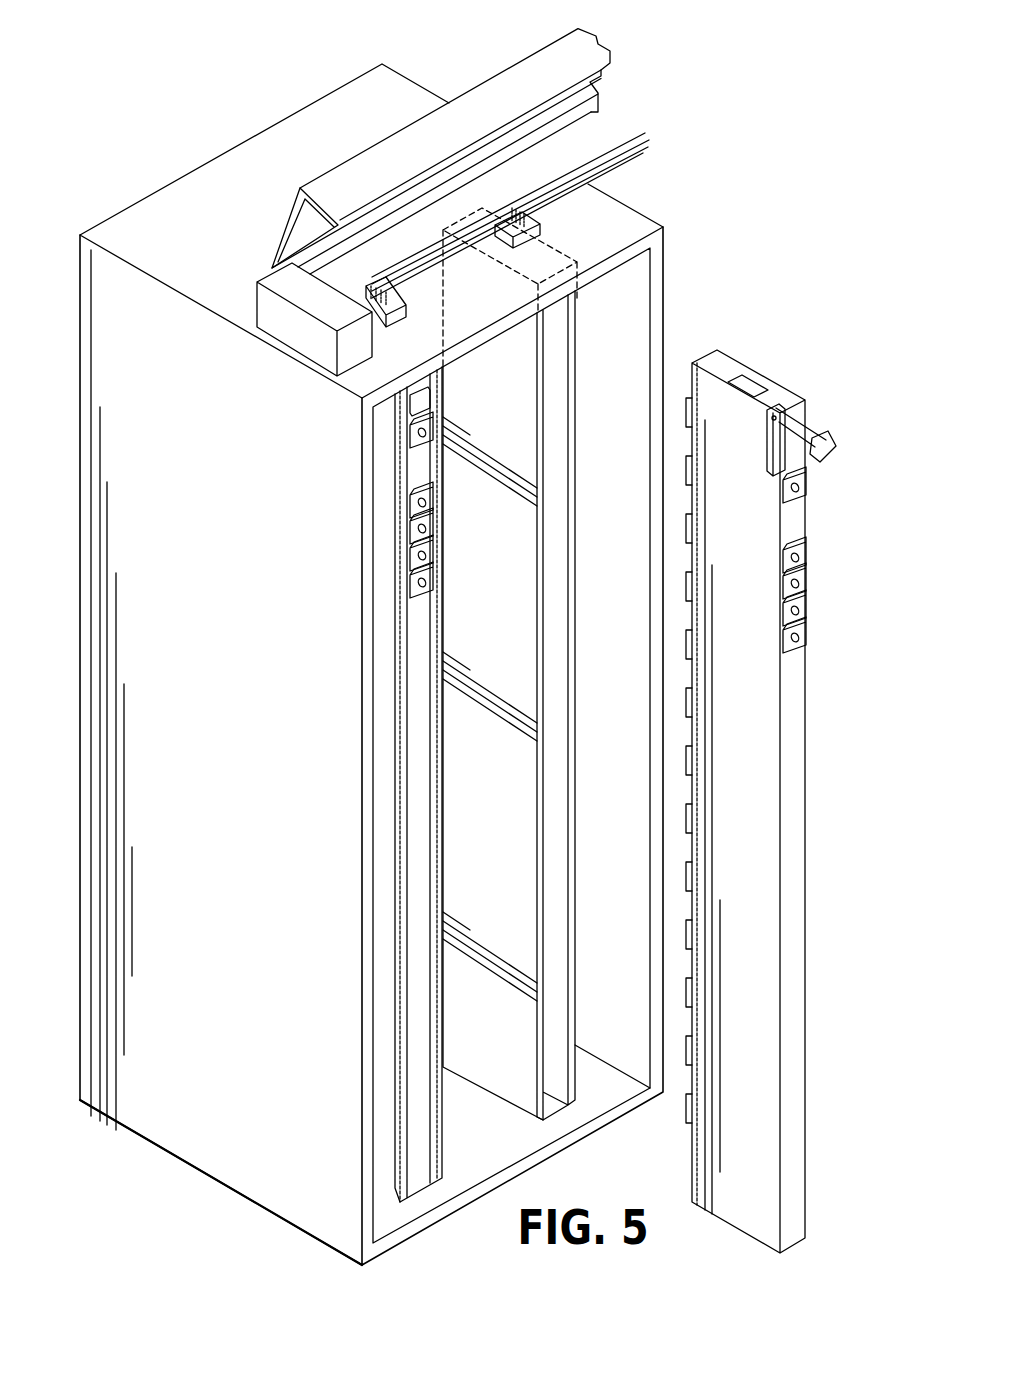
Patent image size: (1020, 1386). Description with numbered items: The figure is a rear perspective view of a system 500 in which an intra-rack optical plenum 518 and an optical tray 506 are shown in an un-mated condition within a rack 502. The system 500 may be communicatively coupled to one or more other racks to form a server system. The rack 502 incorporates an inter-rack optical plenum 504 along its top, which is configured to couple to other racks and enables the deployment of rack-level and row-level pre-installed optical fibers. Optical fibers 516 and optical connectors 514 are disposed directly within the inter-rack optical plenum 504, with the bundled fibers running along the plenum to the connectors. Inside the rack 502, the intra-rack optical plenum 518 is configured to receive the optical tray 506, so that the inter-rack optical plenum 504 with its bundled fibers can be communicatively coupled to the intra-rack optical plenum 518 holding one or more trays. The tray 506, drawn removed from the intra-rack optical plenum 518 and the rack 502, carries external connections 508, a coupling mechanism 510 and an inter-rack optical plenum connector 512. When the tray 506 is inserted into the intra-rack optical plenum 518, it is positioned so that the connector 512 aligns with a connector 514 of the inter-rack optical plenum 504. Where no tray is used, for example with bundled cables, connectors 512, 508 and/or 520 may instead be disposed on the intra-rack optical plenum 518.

The system 500 is at (782, 87).
The rack 502 is at (239, 146).
The inter-rack optical plenum 504 is at (506, 68).
The optical tray 506 is at (422, 772).
The external connections 508 is at (436, 522).
The coupling mechanism 510 is at (431, 399).
The inter-rack optical plenum connector 512 is at (749, 380).
The optical connectors 514 is at (539, 221).
The optical fibers 516 is at (613, 152).
The intra-rack optical plenum 518 is at (467, 624).
The connectors 520 is at (689, 404).